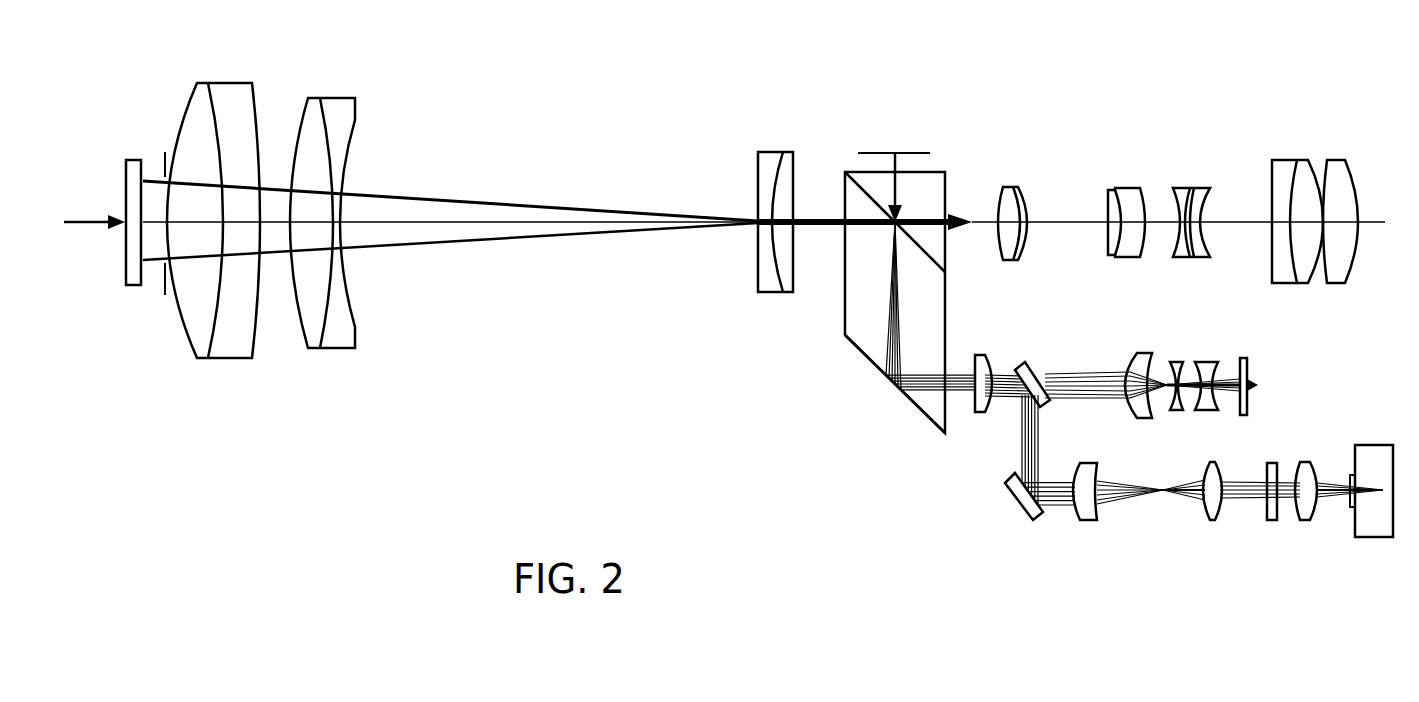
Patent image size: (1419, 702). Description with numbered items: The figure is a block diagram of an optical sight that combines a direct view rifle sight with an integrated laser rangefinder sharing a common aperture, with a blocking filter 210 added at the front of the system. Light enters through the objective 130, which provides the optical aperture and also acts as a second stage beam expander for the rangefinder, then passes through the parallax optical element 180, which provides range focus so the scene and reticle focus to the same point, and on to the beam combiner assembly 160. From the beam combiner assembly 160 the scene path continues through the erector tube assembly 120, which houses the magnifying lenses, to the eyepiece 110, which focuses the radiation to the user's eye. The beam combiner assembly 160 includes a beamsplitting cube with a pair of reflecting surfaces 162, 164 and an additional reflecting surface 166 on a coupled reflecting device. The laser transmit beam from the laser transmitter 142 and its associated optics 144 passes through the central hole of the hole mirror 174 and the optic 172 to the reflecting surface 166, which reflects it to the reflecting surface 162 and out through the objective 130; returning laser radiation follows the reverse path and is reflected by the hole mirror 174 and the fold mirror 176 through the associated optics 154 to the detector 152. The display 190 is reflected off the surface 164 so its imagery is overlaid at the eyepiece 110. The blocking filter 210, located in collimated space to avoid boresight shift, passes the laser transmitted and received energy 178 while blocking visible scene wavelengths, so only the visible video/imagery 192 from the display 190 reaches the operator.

The eyepiece 110 is at (1362, 148).
The erector tube assembly 120 is at (1000, 148).
The objective 130 is at (197, 70).
The laser transmitter 142 is at (1250, 370).
The associated optics 144 is at (1118, 341).
The detector 152 is at (1372, 539).
The associated optics 154 is at (1318, 537).
The beam combiner assembly 160 is at (822, 338).
The reflecting surface 162 is at (856, 198).
The reflecting surface 164 is at (937, 243).
The reflecting surface 166 is at (916, 407).
The optic 172 is at (981, 352).
The hole mirror 174 is at (1035, 362).
The fold mirror 176 is at (1014, 505).
The laser transmitted and received energy 178 is at (578, 206).
The parallax optical element 180 is at (770, 150).
The display 190 is at (897, 150).
The visible video/imagery 192 is at (952, 215).
The blocking filter 210 is at (152, 318).